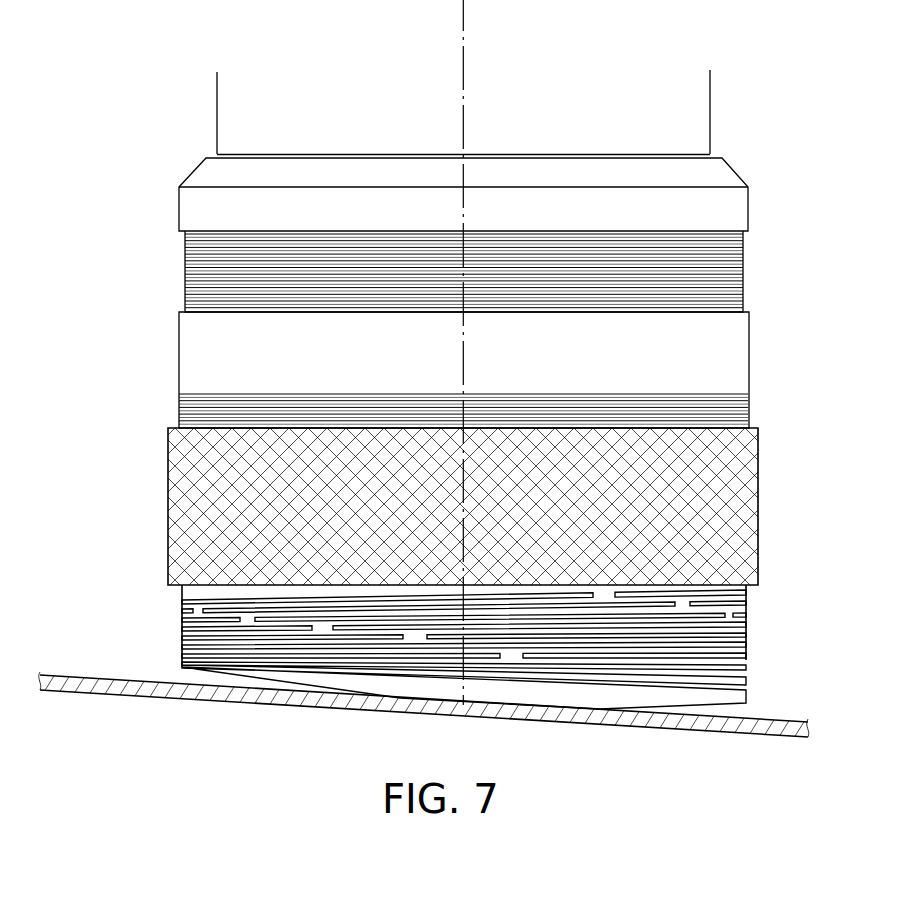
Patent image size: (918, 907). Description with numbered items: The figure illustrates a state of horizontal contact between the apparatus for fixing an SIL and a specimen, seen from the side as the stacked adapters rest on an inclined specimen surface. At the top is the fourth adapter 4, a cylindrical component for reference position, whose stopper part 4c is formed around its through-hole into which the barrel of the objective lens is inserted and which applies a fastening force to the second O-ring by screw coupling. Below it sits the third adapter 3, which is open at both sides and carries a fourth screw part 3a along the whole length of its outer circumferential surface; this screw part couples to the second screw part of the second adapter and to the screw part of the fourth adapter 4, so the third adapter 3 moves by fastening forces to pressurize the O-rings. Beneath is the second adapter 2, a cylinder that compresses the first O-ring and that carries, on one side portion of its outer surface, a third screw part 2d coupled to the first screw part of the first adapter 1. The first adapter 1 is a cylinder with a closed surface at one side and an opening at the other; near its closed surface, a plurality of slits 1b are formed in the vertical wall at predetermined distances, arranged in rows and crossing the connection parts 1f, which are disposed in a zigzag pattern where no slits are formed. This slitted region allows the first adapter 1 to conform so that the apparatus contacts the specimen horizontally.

The first adapter 1 is at (758, 485).
The slit 1b is at (740, 622).
The connection part 1f is at (680, 608).
The second adapter 2 is at (712, 360).
The third screw part 2d is at (185, 412).
The third adapter 3 is at (178, 272).
The fourth screw part 3a is at (697, 270).
The fourth adapter 4 is at (190, 175).
The stopper part 4c is at (215, 157).